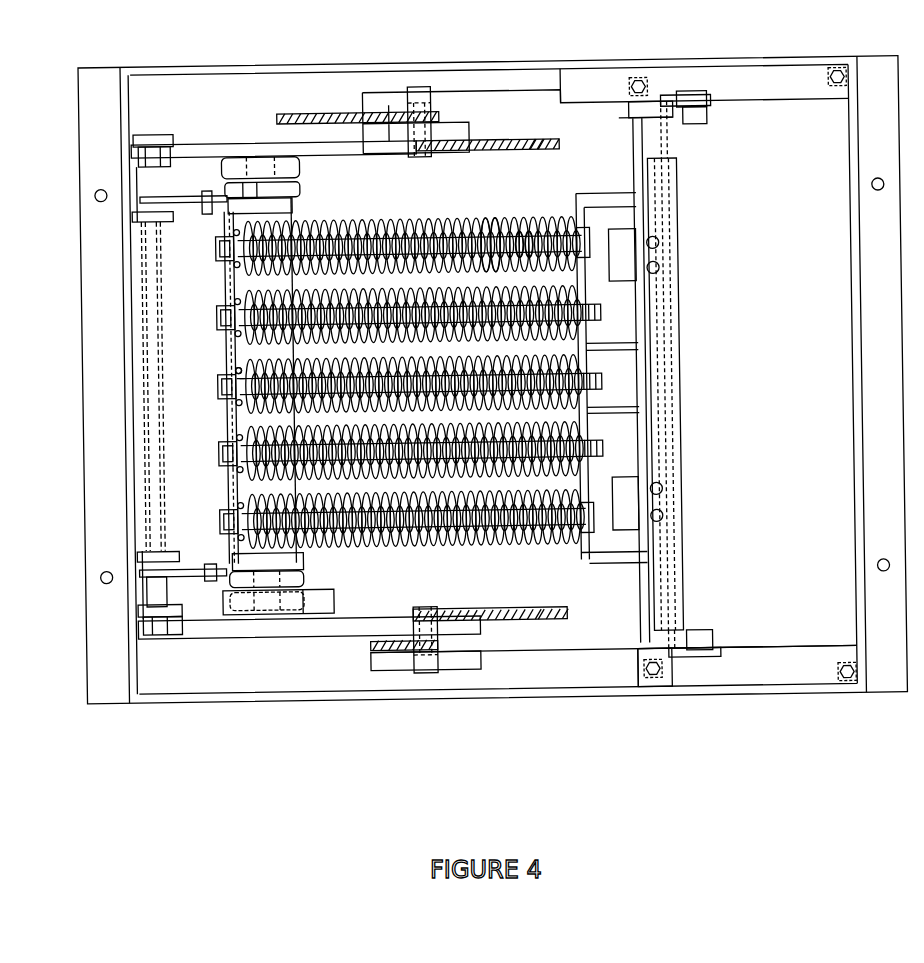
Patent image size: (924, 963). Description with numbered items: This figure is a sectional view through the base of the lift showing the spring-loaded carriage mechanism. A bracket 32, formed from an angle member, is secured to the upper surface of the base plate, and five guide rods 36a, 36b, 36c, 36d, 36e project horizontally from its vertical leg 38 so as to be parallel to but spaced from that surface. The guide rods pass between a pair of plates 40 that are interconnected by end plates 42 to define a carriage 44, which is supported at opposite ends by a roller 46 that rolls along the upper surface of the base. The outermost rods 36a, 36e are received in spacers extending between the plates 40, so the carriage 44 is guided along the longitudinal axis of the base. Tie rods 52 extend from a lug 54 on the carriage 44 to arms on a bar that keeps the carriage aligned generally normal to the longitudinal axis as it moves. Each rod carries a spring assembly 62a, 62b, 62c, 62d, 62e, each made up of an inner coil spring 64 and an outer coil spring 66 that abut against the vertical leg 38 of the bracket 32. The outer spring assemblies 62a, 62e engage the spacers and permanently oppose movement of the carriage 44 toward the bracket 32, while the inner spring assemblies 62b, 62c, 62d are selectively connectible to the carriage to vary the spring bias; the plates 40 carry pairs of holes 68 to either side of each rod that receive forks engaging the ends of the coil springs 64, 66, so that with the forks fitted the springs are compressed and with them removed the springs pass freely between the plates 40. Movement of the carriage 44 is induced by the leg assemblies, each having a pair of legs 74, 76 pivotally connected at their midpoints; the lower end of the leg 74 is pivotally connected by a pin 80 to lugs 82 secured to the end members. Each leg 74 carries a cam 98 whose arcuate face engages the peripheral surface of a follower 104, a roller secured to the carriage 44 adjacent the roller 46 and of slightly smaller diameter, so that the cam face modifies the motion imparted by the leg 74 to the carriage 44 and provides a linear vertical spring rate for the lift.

The bracket 32 is at (617, 193).
The outermost guide rod 36a is at (217, 243).
The intermediate guide rod 36b is at (230, 310).
The intermediate guide rod 36c is at (207, 387).
The intermediate guide rod 36d is at (223, 447).
The outermost guide rod 36e is at (220, 517).
The vertical leg 38 is at (582, 558).
The plate 40 is at (240, 285).
The end plate 42 is at (287, 205).
The carriage 44 is at (222, 480).
The roller 46 is at (220, 187).
The tie rod 52 is at (170, 192).
The lug 54 is at (228, 565).
The outer spring assembly 62a is at (400, 207).
The inner spring assembly 62b is at (586, 293).
The inner spring assembly 62c is at (586, 358).
The inner spring assembly 62d is at (586, 424).
The outer spring assembly 62e is at (470, 550).
The inner coil spring 64 is at (483, 217).
The outer coil spring 66 is at (517, 217).
The hole 68 is at (233, 368).
The leg 74 is at (222, 147).
The leg 76 is at (563, 98).
The pin 80 is at (160, 593).
The lug 82 is at (143, 633).
The cam 98 is at (317, 602).
The follower 104 is at (245, 603).